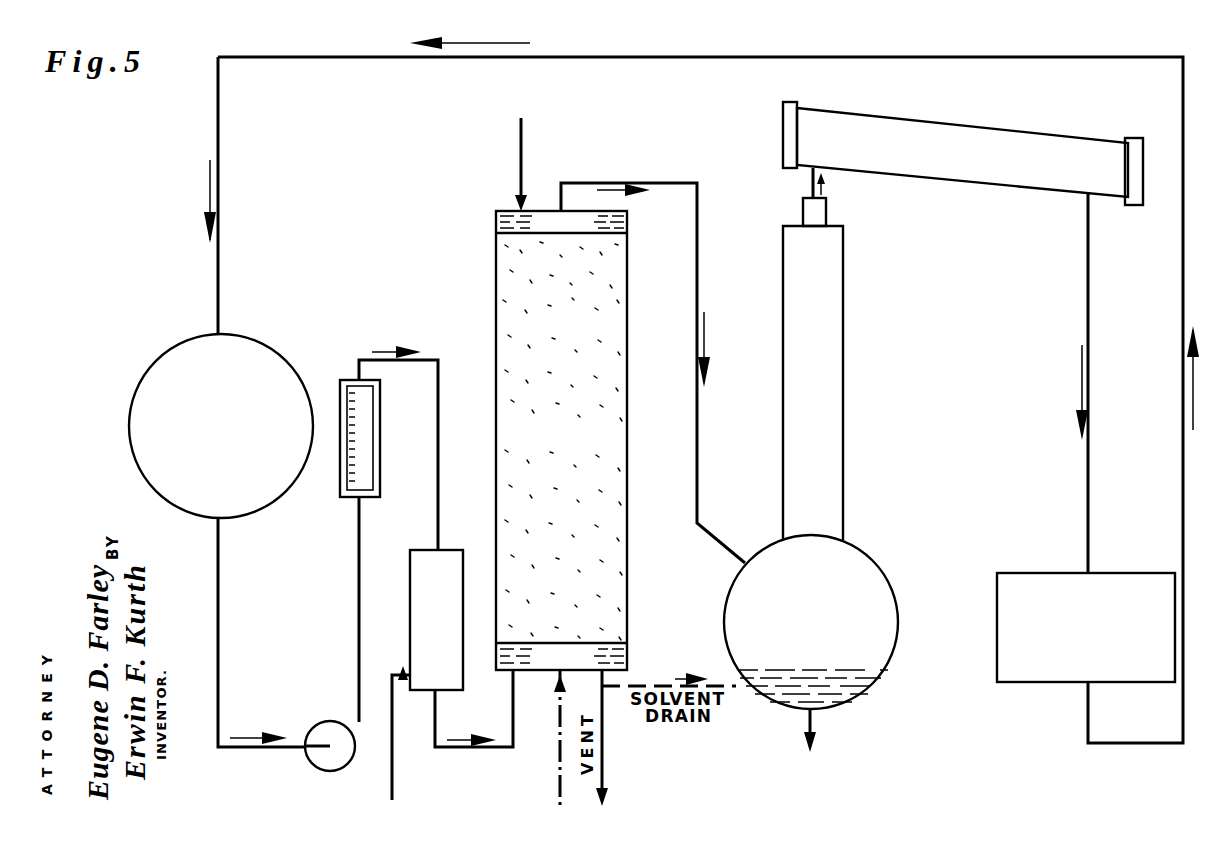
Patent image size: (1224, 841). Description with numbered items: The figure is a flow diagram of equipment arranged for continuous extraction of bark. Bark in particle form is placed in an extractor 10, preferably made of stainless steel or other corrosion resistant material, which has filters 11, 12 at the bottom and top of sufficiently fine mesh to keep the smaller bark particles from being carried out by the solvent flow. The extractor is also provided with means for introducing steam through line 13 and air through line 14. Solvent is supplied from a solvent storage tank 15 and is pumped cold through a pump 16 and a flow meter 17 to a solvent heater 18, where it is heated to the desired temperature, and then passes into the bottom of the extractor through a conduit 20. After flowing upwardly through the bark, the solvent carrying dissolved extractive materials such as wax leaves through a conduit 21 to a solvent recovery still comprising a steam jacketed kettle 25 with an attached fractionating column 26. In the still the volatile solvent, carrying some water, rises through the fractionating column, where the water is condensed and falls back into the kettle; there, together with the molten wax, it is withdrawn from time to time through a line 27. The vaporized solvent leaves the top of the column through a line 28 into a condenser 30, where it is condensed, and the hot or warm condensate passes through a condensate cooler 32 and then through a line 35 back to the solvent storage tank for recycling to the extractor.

The extractor 10 is at (627, 375).
The filter 11 is at (627, 655).
The filter 12 is at (496, 218).
The steam line 13 is at (560, 692).
The air line 14 is at (521, 129).
The solvent storage tank 15 is at (153, 364).
The pump 16 is at (330, 771).
The flow meter 17 is at (378, 408).
The solvent heater 18 is at (450, 549).
The conduit 20 is at (513, 712).
The conduit 21 is at (561, 190).
The steam jacketed kettle 25 is at (898, 626).
The fractionating column 26 is at (843, 398).
The withdrawal line 27 is at (812, 712).
The vapor line 28 is at (813, 178).
The condenser 30 is at (985, 184).
The condensate cooler 32 is at (1050, 548).
The recovered solvent line 35 is at (932, 56).